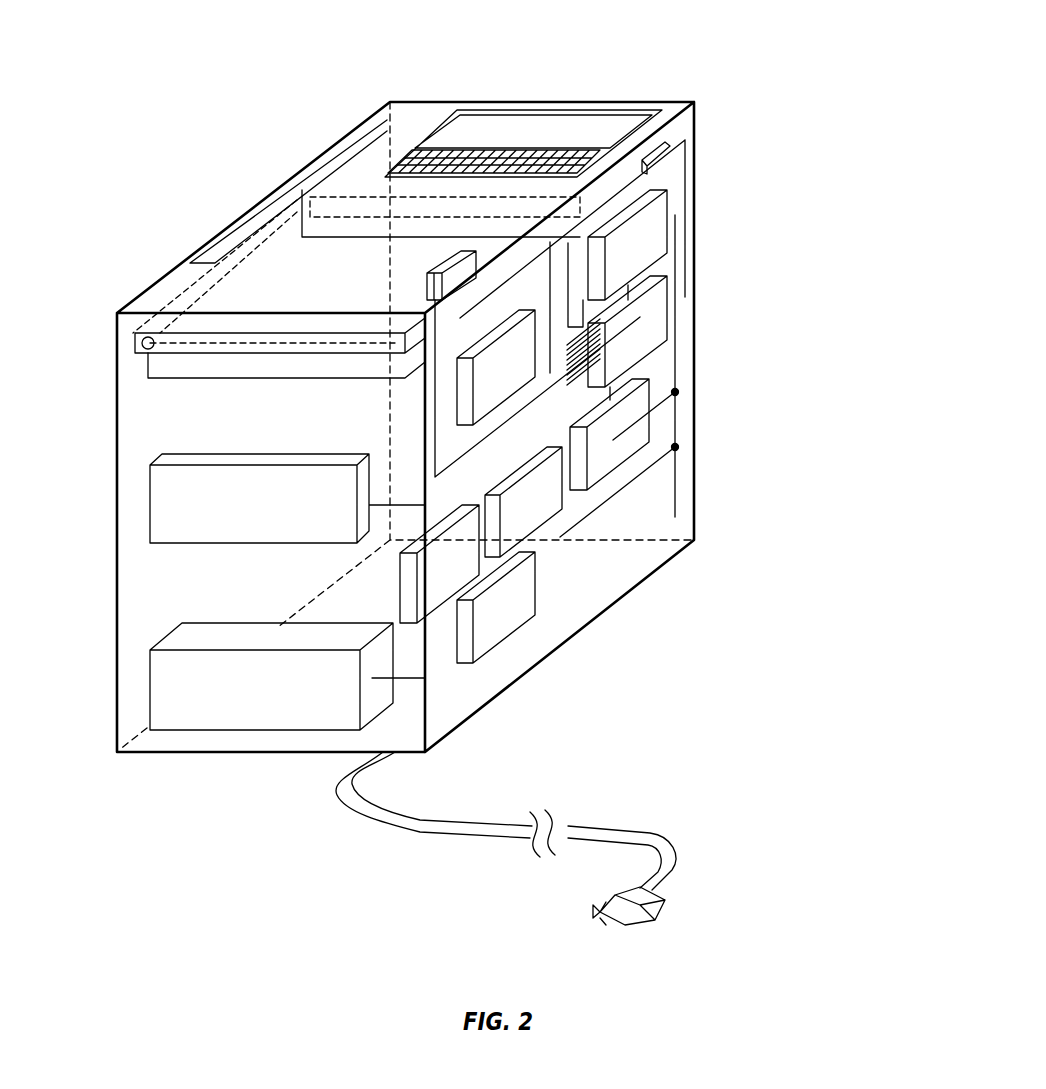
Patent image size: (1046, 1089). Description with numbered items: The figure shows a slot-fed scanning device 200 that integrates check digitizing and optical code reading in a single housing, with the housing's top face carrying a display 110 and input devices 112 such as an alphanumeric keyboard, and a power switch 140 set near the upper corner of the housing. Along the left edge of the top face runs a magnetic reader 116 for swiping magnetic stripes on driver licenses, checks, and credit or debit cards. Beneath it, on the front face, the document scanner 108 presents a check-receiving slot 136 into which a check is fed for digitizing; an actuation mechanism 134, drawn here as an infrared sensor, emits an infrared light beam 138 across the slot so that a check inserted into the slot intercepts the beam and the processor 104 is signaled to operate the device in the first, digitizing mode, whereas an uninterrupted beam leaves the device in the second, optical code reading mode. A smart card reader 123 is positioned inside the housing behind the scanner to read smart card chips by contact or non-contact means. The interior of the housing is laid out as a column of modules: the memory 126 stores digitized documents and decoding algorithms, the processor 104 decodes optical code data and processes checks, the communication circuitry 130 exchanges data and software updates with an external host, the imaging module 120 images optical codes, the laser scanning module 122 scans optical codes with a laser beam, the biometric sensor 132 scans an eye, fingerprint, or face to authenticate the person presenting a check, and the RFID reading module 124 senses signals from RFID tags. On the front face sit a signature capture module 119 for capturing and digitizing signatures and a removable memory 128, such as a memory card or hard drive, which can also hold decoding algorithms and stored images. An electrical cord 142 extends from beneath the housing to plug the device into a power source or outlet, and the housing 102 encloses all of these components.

The device 200 is at (304, 44).
The housing 102 is at (413, 100).
The input devices 112 is at (481, 162).
The display 110 is at (562, 132).
The magnetic reader 116 is at (334, 157).
The check-receiving slot 136 is at (265, 340).
The infrared light beam 138 is at (190, 342).
The actuation mechanism 134 is at (143, 348).
The document scanner 108 is at (197, 372).
The signature capture module 119 is at (148, 516).
The removable memory 128 is at (148, 698).
The smart card reader 123 is at (430, 273).
The power switch 140 is at (652, 167).
The memory 126 is at (643, 240).
The processor 104 is at (657, 323).
The communication circuitry 130 is at (507, 367).
The imaging module 120 is at (603, 453).
The laser scanning module 122 is at (528, 518).
The biometric sensor 132 is at (498, 603).
The RFID reading module 124 is at (457, 598).
The electrical cord 142 is at (642, 852).